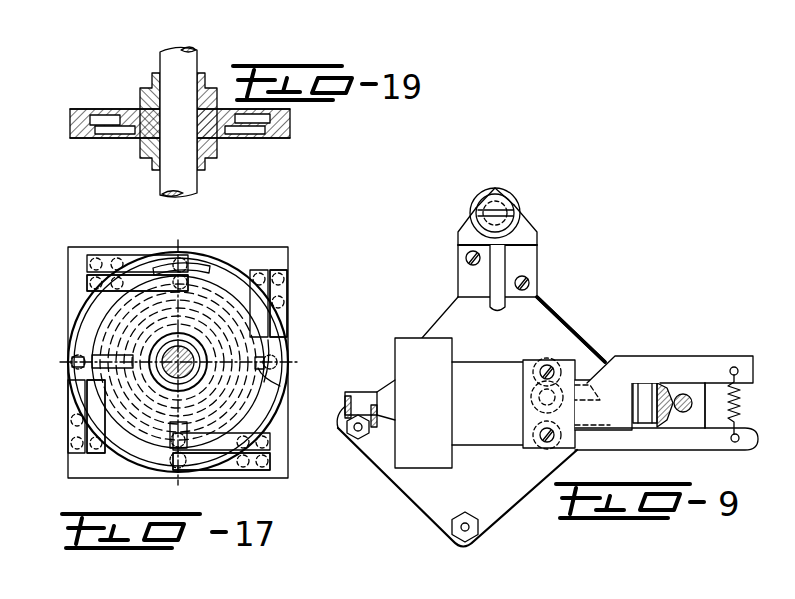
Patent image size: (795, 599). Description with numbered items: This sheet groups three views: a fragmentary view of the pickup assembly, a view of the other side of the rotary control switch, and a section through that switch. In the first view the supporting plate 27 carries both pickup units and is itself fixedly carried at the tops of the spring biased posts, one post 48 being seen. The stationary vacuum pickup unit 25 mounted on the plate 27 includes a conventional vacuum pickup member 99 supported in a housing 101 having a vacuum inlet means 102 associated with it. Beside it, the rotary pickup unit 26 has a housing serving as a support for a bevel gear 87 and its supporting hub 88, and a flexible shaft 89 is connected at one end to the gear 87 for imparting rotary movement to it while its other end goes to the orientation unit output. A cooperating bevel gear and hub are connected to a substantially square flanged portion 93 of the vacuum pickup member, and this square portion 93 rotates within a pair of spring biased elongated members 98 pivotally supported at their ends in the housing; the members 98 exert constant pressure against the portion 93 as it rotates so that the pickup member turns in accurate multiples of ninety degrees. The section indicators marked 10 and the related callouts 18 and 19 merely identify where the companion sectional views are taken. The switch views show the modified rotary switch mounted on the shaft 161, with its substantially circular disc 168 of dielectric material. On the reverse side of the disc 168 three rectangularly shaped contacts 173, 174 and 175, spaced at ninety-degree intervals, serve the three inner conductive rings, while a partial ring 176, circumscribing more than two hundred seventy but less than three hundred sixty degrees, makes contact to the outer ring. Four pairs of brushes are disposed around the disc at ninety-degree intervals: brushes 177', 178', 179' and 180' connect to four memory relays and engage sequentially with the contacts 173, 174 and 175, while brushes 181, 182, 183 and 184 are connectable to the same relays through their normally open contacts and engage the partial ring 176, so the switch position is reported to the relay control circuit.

In FIG. 19, the shaft 161 is at (160, 70).
In FIG. 19, the circular disc 168 is at (70, 122).
In FIG. 17, the circular disc 168 is at (272, 410).
In FIG. 17, the brush 184 is at (100, 256).
In FIG. 17, the brush 180' is at (106, 284).
In FIG. 17, the brush 177' is at (270, 281).
In FIG. 17, the brush 181 is at (287, 270).
In FIG. 17, the brush 183 is at (68, 460).
In FIG. 17, the brush 179' is at (109, 427).
In FIG. 17, the brush 178' is at (253, 451).
In FIG. 17, the brush 182 is at (270, 461).
In FIG. 17, the rectangularly shaped contact 175 is at (96, 357).
In FIG. 17, the rectangularly shaped contact 174 is at (176, 432).
In FIG. 17, the rectangularly shaped contact 173 is at (287, 372).
In FIG. 17, the ring 176 is at (281, 396).
In FIG. 17, the section line 18 is at (68, 362).
In FIG. 17, the section line 19 is at (178, 240).
In FIG. 9, the section line 10 is at (590, 325).
In FIG. 9, the vacuum pickup member 99 is at (510, 200).
In FIG. 9, the housing 101 is at (537, 224).
In FIG. 9, the stationary vacuum pickup unit 25 is at (590, 256).
In FIG. 9, the supporting plate 27 is at (571, 320).
In FIG. 9, the vacuum inlet means 102 is at (506, 310).
In FIG. 9, the rotary pickup unit 26 is at (624, 474).
In FIG. 9, the flexible shaft 89 is at (353, 392).
In FIG. 9, the spring biased post 48 is at (468, 512).
In FIG. 9, the spring biased elongated member 98 is at (651, 356).
In FIG. 9, the supporting hub 88 is at (645, 390).
In FIG. 9, the bevel gear 87 is at (670, 384).
In FIG. 9, the square flanged portion 93 is at (710, 418).